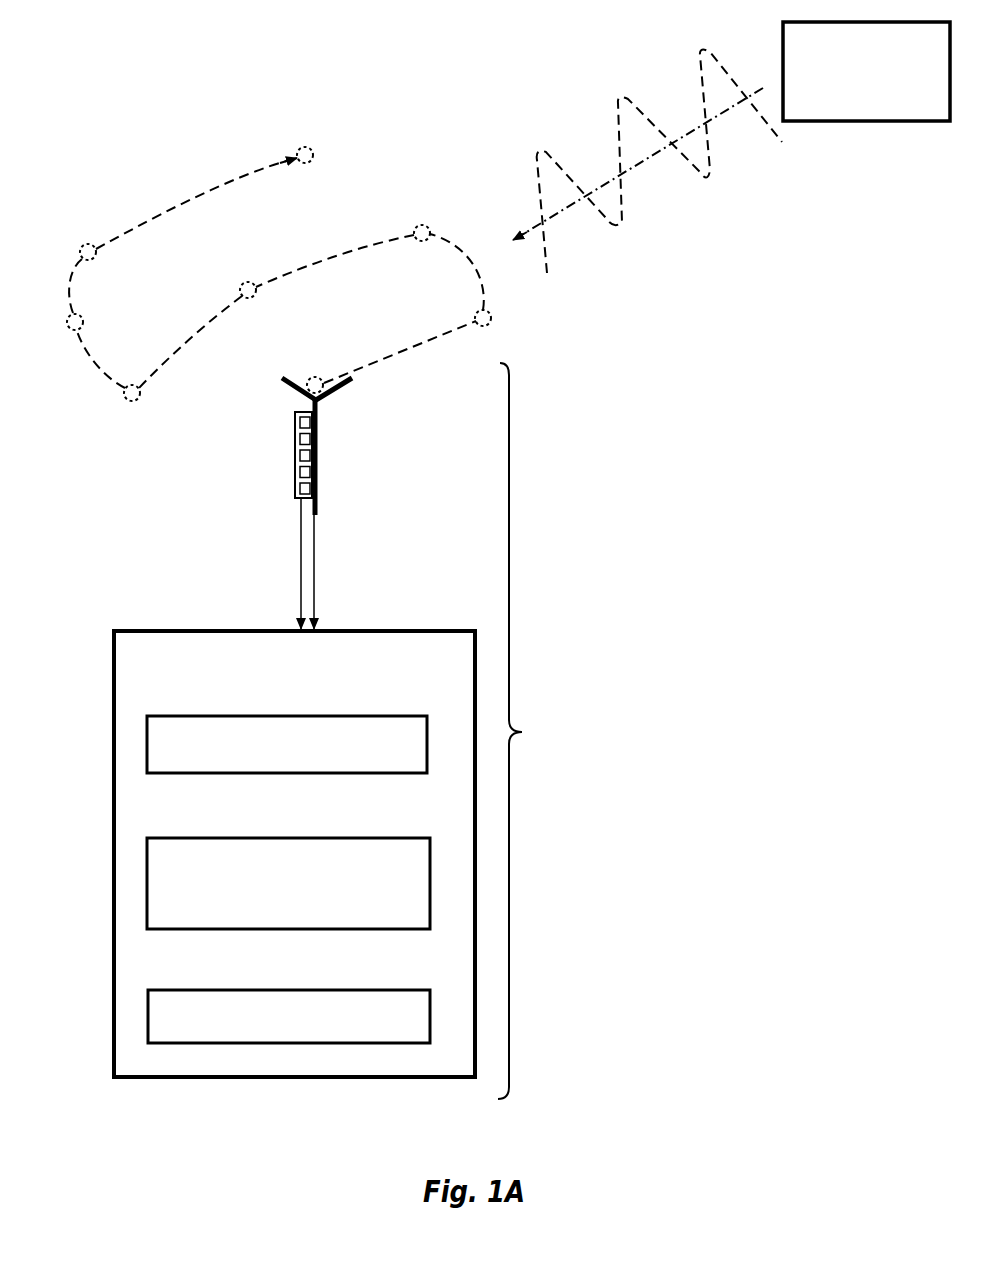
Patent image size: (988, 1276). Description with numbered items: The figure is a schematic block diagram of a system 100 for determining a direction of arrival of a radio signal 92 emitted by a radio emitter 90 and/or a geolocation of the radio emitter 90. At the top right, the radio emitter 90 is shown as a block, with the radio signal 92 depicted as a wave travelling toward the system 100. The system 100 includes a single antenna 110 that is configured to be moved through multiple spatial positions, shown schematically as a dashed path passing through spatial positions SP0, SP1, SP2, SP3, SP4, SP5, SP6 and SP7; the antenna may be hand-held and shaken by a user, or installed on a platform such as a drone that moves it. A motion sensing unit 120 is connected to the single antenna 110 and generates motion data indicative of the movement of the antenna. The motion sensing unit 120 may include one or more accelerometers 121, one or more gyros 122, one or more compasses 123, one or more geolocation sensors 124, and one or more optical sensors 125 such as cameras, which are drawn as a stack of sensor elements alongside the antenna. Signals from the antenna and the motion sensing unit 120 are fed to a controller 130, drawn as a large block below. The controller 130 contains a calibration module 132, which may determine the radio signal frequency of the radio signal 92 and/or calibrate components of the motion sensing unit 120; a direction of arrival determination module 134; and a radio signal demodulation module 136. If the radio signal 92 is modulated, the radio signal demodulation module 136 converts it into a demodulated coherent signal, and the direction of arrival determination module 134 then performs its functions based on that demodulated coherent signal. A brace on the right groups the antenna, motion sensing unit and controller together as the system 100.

The radio emitter 90 is at (783, 70).
The radio signal 92 is at (596, 98).
The system 100 is at (533, 731).
The single antenna 110 is at (283, 384).
The motion sensing unit 120 is at (294, 467).
The accelerometers 121 is at (300, 421).
The gyros 122 is at (313, 447).
The compasses 123 is at (300, 454).
The geolocation sensors 124 is at (313, 477).
The optical sensors 125 is at (300, 489).
The controller 130 is at (185, 631).
The calibration module 132 is at (215, 716).
The direction of arrival determination module 134 is at (215, 838).
The radio signal demodulation module 136 is at (215, 990).
The spatial position SP0 is at (308, 381).
The spatial position SP1 is at (490, 316).
The spatial position SP2 is at (430, 229).
The spatial position SP3 is at (243, 283).
The spatial position SP4 is at (127, 387).
The spatial position SP5 is at (83, 318).
The spatial position SP6 is at (82, 247).
The spatial position SP7 is at (299, 150).